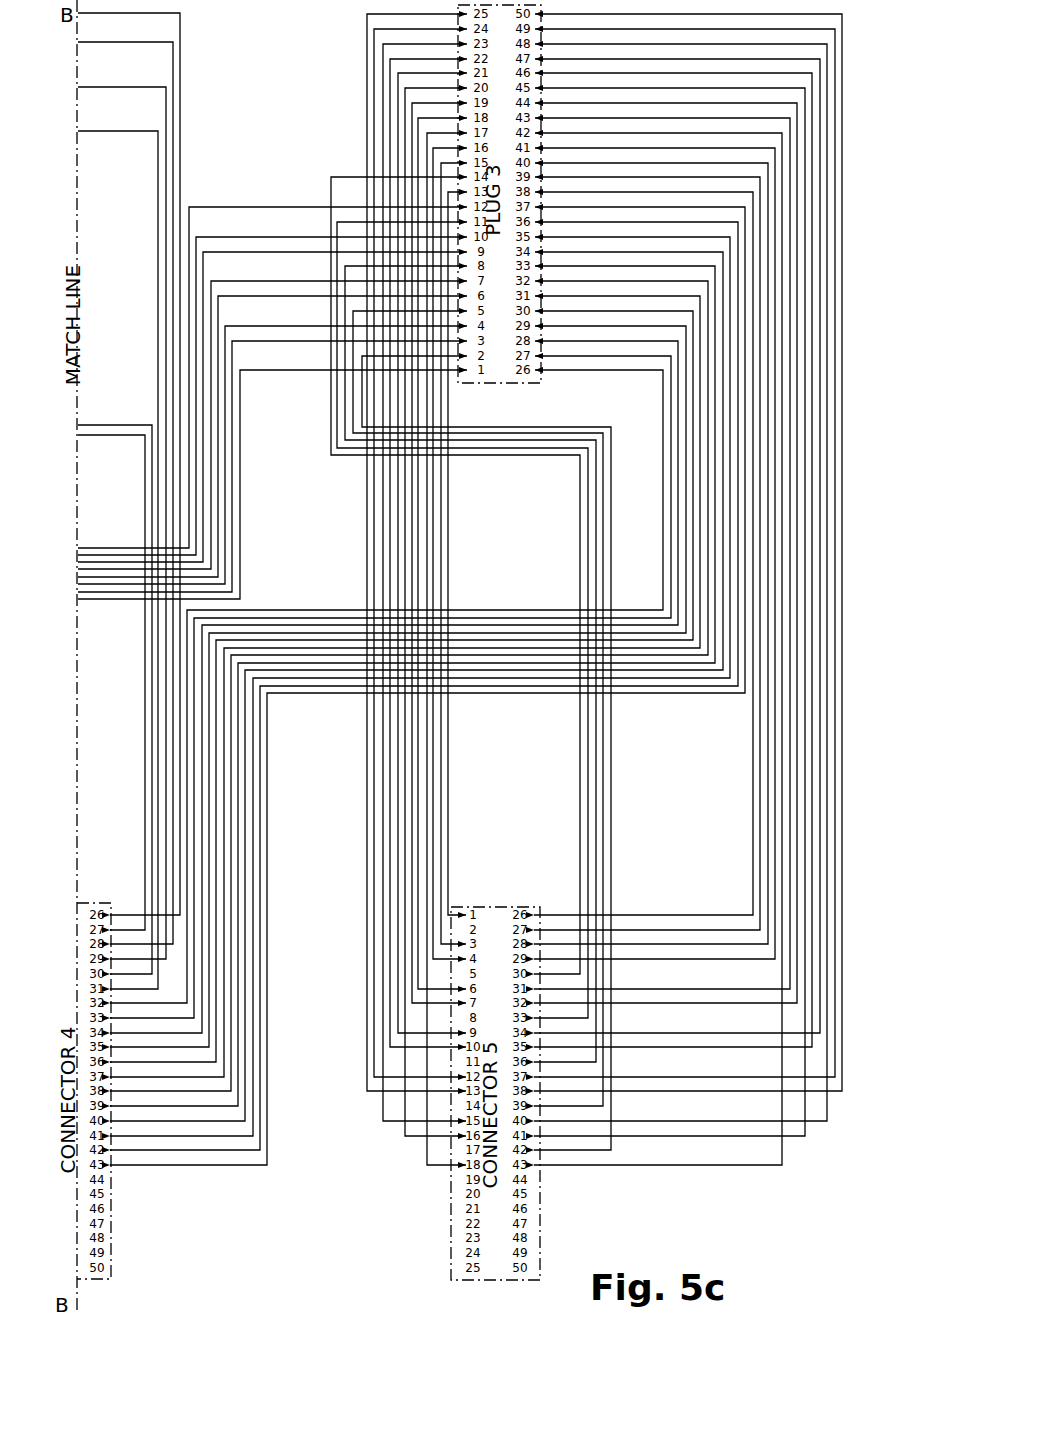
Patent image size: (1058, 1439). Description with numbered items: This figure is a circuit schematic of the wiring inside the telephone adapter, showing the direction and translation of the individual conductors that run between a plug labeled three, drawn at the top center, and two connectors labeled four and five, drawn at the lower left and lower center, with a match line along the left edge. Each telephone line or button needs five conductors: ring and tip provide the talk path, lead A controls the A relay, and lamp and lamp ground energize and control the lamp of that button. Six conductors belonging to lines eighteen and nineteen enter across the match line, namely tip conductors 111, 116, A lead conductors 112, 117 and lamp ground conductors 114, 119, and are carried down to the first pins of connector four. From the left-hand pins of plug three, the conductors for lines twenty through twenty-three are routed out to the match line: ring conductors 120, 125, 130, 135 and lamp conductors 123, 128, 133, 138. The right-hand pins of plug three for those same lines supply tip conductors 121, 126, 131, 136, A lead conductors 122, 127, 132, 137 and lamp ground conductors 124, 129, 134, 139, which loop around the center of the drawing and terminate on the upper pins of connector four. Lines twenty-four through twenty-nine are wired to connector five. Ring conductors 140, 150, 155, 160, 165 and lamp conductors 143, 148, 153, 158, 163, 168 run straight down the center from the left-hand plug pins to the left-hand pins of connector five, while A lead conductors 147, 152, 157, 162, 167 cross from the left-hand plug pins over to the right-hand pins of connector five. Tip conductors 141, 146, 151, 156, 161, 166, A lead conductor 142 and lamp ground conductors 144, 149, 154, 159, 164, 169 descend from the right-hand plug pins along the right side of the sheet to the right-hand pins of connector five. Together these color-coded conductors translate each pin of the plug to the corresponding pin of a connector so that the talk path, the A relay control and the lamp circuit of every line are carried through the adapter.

The tip conductor 111 is at (182, 16).
The A lead conductor 112 is at (126, 436).
The lamp ground conductor 114 is at (139, 44).
The tip conductor 116 is at (109, 90).
The A lead conductor 117 is at (132, 422).
The lamp ground conductor 119 is at (89, 132).
The ring conductor 120 is at (252, 372).
The tip conductor 121 is at (591, 373).
The A lead conductor 122 is at (614, 357).
The lamp conductor 123 is at (271, 343).
The lamp ground conductor 124 is at (624, 342).
The ring conductor 125 is at (285, 326).
The tip conductor 126 is at (686, 430).
The A lead conductor 127 is at (693, 452).
The lamp conductor 128 is at (284, 298).
The lamp ground conductor 129 is at (656, 648).
The ring conductor 130 is at (268, 280).
The tip conductor 131 is at (690, 652).
The A lead conductor 132 is at (715, 583).
The lamp conductor 133 is at (266, 254).
The lamp ground conductor 134 is at (723, 565).
The ring conductor 135 is at (282, 235).
The tip conductor 136 is at (730, 544).
The A lead conductor 137 is at (738, 520).
The lamp conductor 138 is at (246, 202).
The lamp ground conductor 139 is at (745, 498).
The ring conductor 140 is at (448, 425).
The tip conductor 141 is at (753, 464).
The A lead conductor 142 is at (760, 282).
The lamp conductor 143 is at (441, 493).
The lamp ground conductor 144 is at (433, 473).
The tip conductor 146 is at (775, 232).
The A lead conductor 147 is at (328, 179).
The lamp conductor 148 is at (418, 155).
The lamp ground conductor 149 is at (790, 184).
The ring conductor 150 is at (412, 137).
The tip conductor 151 is at (797, 161).
The A lead conductor 152 is at (336, 202).
The lamp conductor 153 is at (398, 98).
The lamp ground conductor 154 is at (820, 94).
The ring conductor 155 is at (390, 85).
The tip conductor 156 is at (812, 116).
The A lead conductor 157 is at (344, 429).
The lamp conductor 158 is at (372, 46).
The lamp ground conductor 159 is at (836, 42).
The ring conductor 160 is at (365, 22).
The tip conductor 161 is at (843, 18).
The A lead conductor 162 is at (352, 407).
The lamp conductor 163 is at (382, 72).
The lamp ground conductor 164 is at (827, 69).
The ring conductor 165 is at (405, 118).
The tip conductor 166 is at (805, 138).
The A lead conductor 167 is at (517, 426).
The lamp conductor 168 is at (427, 402).
The lamp ground conductor 169 is at (782, 209).